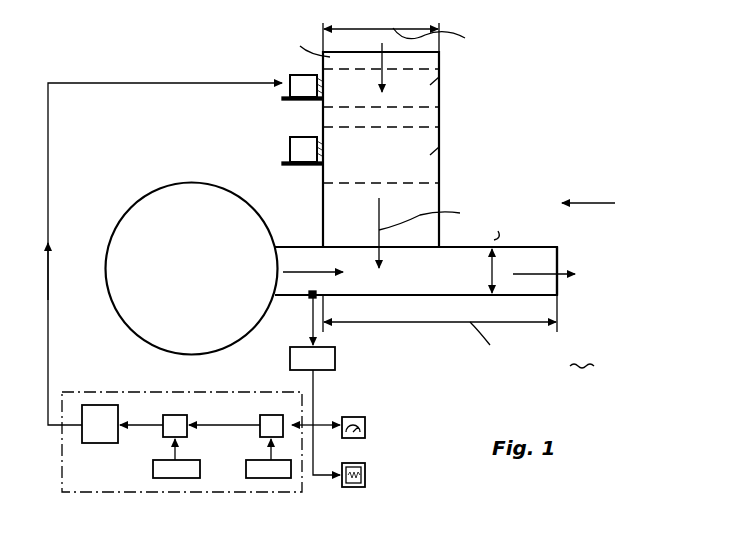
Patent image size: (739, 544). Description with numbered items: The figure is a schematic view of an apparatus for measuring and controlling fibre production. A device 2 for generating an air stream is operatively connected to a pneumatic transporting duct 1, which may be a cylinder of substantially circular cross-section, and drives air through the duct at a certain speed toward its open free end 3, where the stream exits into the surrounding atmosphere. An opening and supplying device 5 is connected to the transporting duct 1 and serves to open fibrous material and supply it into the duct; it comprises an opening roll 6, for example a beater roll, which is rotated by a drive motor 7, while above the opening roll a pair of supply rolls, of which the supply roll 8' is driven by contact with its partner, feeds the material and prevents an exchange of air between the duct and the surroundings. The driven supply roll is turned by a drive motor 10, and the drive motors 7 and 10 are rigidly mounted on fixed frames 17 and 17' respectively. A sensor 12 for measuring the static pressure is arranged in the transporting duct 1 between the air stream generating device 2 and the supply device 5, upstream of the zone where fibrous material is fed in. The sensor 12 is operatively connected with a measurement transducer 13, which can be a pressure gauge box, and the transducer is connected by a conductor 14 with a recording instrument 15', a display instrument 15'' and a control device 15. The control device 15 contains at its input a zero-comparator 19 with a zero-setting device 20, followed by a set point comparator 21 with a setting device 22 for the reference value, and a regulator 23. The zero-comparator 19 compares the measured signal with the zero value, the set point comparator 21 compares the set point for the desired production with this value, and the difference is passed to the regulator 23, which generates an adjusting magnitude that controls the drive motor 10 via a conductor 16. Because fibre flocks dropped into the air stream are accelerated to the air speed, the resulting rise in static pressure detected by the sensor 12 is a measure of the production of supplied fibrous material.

The pneumatic transporting duct 1 is at (520, 247).
The device for generating an air stream 2 is at (106, 268).
The free end 3 is at (557, 247).
The opening and supplying device 5 is at (439, 110).
The opening roll 6 is at (432, 152).
The drive motor 7 is at (296, 145).
The supply roll 8' is at (457, 70).
The drive motor 10 is at (296, 82).
The sensor 12 is at (309, 297).
The measurement transducer 13 is at (335, 358).
The conductor 14 is at (313, 400).
The control device 15 is at (204, 460).
The recording instrument 15' is at (383, 472).
The display instrument 15'' is at (385, 423).
The conductor 16 is at (48, 148).
The fixed frame 17 is at (263, 106).
The fixed frame 17' is at (269, 158).
The zero-comparator 19 is at (268, 423).
The zero-setting device 20 is at (255, 472).
The set point comparator 21 is at (170, 425).
The setting device 22 is at (168, 472).
The regulator 23 is at (92, 437).